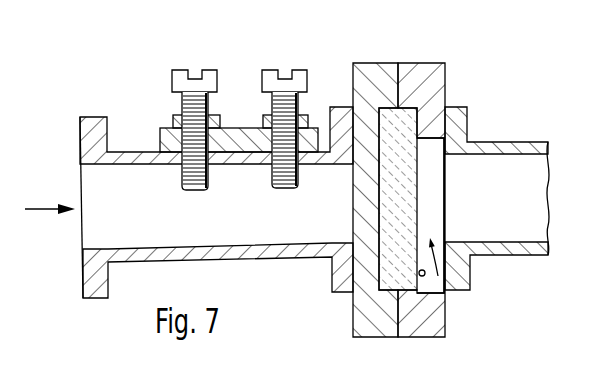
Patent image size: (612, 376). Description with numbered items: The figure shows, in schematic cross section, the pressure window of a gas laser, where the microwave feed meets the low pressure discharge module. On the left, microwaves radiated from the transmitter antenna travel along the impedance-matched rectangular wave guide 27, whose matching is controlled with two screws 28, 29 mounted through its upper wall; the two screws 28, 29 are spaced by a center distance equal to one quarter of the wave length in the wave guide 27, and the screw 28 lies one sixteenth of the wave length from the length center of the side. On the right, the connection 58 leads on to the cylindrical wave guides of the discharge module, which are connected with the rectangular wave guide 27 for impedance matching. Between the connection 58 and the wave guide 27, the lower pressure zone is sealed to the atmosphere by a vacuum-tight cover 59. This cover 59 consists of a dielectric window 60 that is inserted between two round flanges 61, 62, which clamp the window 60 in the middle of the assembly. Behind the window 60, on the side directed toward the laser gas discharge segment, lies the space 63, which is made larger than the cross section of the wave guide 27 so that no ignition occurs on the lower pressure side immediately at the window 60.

The rectangular wave guide 27 is at (97, 128).
The screw 28 is at (294, 70).
The screw 29 is at (205, 70).
The connection 58 is at (508, 142).
The vacuum-tight cover 59 is at (420, 123).
The window 60 is at (406, 207).
The round flange 61 is at (370, 82).
The round flange 62 is at (418, 77).
The space 63 is at (424, 276).